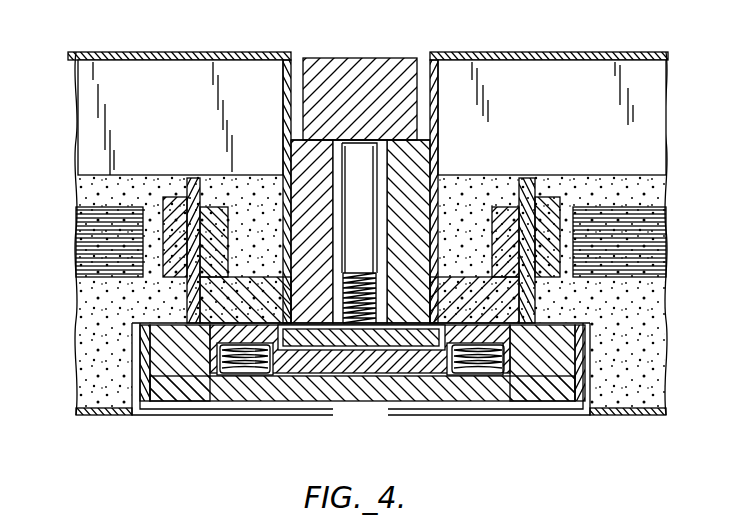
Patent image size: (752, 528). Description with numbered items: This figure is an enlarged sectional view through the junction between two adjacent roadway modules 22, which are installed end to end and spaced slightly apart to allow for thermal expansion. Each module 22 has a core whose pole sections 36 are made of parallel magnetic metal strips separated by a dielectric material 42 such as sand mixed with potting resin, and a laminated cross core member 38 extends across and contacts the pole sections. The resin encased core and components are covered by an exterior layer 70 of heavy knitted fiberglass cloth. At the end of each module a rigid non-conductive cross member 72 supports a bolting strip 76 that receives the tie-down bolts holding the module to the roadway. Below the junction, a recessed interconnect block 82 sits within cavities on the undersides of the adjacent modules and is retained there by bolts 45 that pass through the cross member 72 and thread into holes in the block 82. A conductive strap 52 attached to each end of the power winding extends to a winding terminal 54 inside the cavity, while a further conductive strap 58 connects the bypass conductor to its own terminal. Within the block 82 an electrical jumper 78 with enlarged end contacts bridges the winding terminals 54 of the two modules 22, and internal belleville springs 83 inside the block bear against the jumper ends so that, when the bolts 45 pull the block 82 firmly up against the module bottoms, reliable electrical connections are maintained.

The module 22 is at (371, 226).
The pole section 36 is at (175, 93).
The cross core member 38 is at (82, 232).
The dielectric material 42 is at (108, 299).
The bolt 45 is at (358, 197).
The conductive strap 52 is at (212, 213).
The winding terminal 54 is at (263, 290).
The conductive strap 58 is at (170, 197).
The exterior layer 70 is at (135, 53).
The cross member 72 is at (338, 191).
The bolting strip 76 is at (395, 83).
The electrical jumper 78 is at (370, 356).
The interconnect block 82 is at (183, 372).
The belleville spring 83 is at (257, 374).